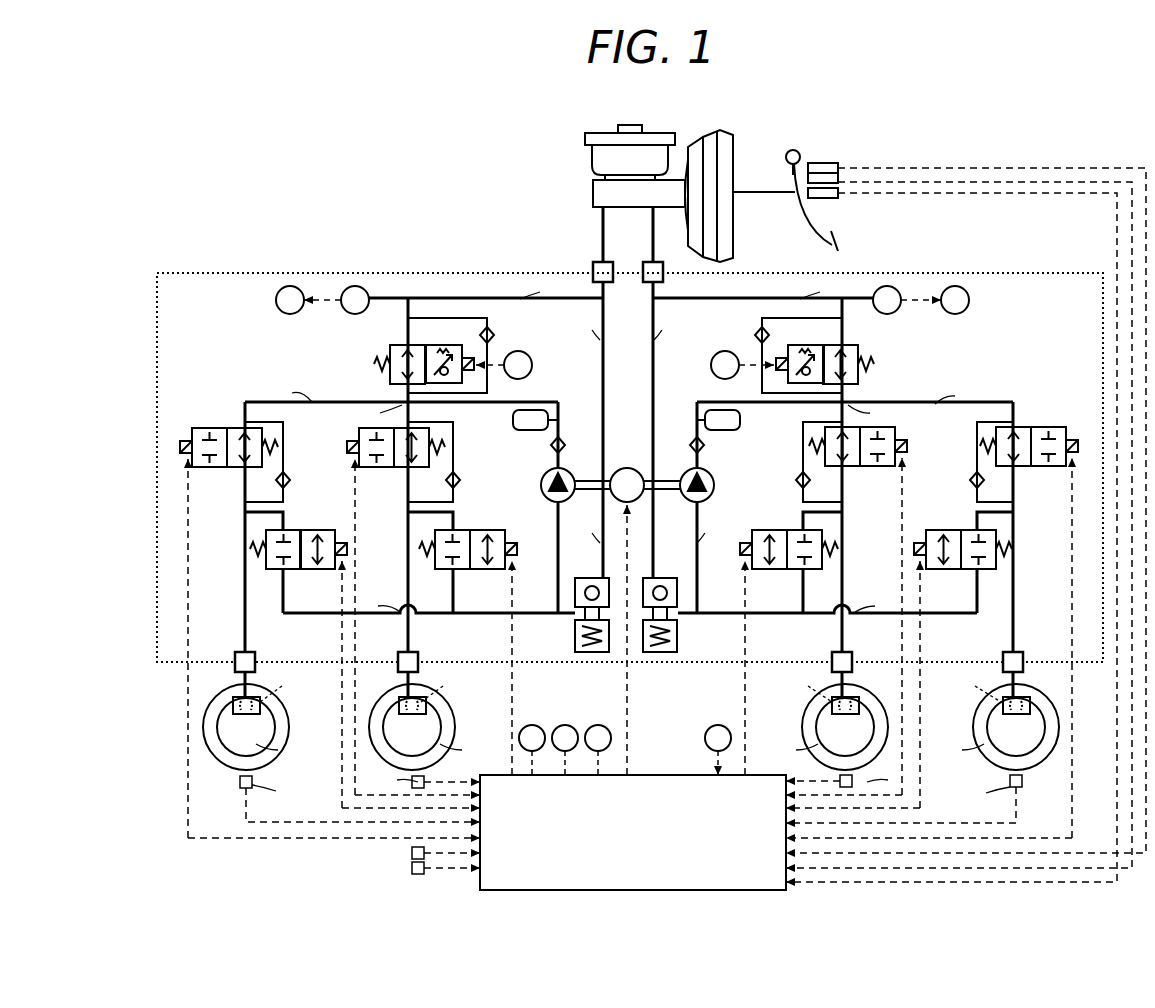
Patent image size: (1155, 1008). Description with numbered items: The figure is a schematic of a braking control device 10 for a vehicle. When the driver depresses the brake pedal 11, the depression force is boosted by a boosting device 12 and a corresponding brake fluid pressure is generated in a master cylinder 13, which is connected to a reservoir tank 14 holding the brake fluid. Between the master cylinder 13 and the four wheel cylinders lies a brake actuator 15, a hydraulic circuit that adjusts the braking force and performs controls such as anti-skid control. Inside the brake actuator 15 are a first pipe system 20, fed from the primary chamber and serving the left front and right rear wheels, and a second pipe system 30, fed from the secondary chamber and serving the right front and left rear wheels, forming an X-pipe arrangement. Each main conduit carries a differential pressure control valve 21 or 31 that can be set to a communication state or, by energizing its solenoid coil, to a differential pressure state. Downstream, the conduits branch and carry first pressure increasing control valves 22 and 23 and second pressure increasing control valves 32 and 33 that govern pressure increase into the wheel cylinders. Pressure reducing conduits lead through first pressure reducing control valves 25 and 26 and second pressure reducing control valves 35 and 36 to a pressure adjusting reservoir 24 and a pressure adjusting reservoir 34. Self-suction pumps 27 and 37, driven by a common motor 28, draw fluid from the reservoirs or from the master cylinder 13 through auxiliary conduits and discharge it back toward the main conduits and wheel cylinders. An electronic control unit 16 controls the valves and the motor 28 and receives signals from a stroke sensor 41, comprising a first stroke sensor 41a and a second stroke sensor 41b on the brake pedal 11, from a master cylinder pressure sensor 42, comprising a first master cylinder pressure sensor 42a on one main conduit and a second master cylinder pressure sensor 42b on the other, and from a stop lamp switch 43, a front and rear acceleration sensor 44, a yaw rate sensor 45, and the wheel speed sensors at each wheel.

The braking control device 10 is at (918, 138).
The brake pedal 11 is at (840, 240).
The boosting device 12 is at (702, 131).
The master cylinder 13 is at (593, 185).
The reservoir tank 14 is at (631, 124).
The brake actuator 15 is at (1000, 275).
The electronic control unit 16 is at (660, 774).
The first pipe system 20 is at (940, 330).
The differential pressure control valve 21 is at (858, 359).
The first pressure increasing control valve 22 is at (894, 446).
The first pressure increasing control valve 23 is at (1026, 426).
The pressure adjusting reservoir 24 is at (660, 660).
The first pressure reducing control valve 25 is at (774, 527).
The first pressure reducing control valve 26 is at (944, 527).
The pump 27 is at (716, 484).
The motor 28 is at (628, 466).
The second pipe system 30 is at (280, 330).
The differential pressure control valve 31 is at (388, 359).
The second pressure increasing control valve 32 is at (354, 445).
The second pressure increasing control valve 33 is at (230, 426).
The pressure adjusting reservoir 34 is at (592, 660).
The second pressure reducing control valve 35 is at (458, 527).
The second pressure reducing control valve 36 is at (298, 527).
The pump 37 is at (543, 490).
The stroke sensor 41 is at (866, 124).
The first stroke sensor 41a is at (811, 173).
The second stroke sensor 41b is at (809, 163).
The master cylinder pressure sensor 42 is at (623, 283).
The first master cylinder pressure sensor 42a is at (887, 286).
The second master cylinder pressure sensor 42b is at (355, 286).
The stop lamp switch 43 is at (833, 198).
The front and rear acceleration sensor 44 is at (407, 854).
The yaw rate sensor 45 is at (407, 869).